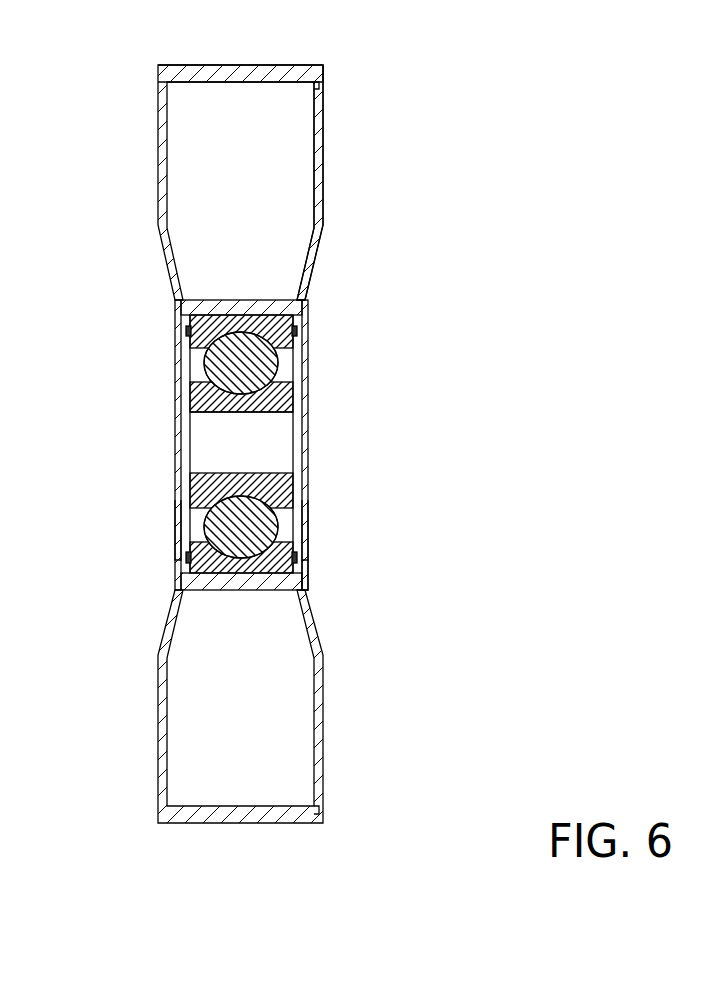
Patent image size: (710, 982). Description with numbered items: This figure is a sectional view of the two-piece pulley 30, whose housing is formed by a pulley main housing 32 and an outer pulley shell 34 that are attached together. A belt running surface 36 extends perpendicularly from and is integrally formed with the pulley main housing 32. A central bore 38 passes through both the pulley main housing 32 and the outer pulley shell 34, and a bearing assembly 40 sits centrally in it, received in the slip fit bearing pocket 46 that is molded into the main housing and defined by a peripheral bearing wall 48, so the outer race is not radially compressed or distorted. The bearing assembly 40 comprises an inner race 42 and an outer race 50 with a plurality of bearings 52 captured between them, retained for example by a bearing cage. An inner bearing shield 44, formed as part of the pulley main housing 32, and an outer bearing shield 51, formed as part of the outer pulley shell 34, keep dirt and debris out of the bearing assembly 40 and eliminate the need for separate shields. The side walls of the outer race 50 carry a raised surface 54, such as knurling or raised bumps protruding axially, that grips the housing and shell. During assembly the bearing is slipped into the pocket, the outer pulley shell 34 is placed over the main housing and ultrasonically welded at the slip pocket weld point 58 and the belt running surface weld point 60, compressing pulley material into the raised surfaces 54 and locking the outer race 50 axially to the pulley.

The two-piece pulley 30 is at (482, 74).
The pulley main housing 32 is at (165, 165).
The outer pulley shell 34 is at (323, 172).
The belt running surface 36 is at (236, 72).
The central bore 38 is at (265, 438).
The bearing assembly 40 is at (190, 393).
The inner race 42 is at (293, 412).
The inner bearing shield 44 is at (303, 536).
The slip fit bearing pocket 46 is at (247, 306).
The peripheral bearing wall 48 is at (232, 585).
The outer race 50 is at (300, 312).
The outer bearing shield 51 is at (177, 530).
The bearings 52 is at (250, 362).
The raised surface 54 is at (186, 330).
The slip pocket weld point 58 is at (300, 588).
The belt running surface weld point 60 is at (322, 88).